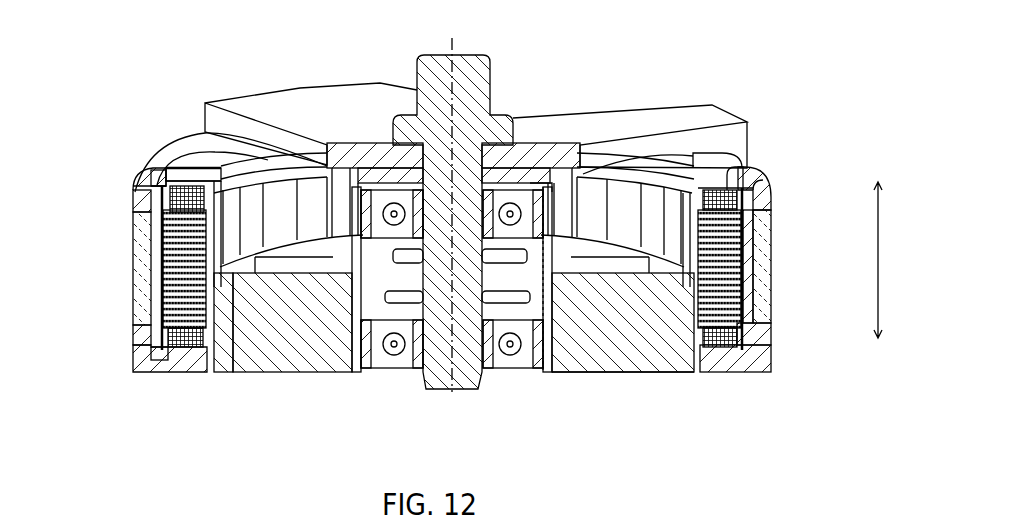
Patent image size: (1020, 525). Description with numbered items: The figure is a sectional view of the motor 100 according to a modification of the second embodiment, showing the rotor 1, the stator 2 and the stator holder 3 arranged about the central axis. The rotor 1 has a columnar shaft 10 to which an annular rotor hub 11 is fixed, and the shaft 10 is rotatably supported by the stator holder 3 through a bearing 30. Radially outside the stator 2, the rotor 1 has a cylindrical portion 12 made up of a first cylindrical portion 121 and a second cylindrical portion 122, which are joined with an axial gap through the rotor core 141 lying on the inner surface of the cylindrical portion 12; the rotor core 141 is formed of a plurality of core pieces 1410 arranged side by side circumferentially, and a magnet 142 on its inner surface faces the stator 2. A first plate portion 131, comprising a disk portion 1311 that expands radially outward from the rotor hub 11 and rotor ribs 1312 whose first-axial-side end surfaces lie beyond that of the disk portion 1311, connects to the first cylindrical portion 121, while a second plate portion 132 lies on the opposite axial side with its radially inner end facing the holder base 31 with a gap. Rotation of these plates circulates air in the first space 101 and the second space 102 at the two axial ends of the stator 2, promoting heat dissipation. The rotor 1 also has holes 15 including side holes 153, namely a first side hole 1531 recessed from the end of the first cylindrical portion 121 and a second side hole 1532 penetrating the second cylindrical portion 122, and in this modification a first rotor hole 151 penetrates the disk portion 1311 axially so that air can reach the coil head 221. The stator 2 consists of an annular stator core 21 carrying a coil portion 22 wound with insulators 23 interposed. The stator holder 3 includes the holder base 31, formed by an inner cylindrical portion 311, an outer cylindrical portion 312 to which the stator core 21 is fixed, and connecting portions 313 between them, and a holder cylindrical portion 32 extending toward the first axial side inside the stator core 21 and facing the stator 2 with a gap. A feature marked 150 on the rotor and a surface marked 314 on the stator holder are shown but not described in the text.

The motor 100 is at (83, 66).
The rotor 1 is at (218, 88).
The shaft 10 is at (417, 85).
The rotor hub 11 is at (528, 157).
The first space 101 is at (187, 178).
The second space 102 is at (187, 352).
The cylindrical portion 12 is at (52, 187).
The first cylindrical portion 121 is at (140, 208).
The second cylindrical portion 122 is at (133, 336).
The first plate portion 131 is at (738, 47).
The disk portion 1311 is at (710, 157).
The rotor rib 1312 is at (618, 117).
The second plate portion 132 is at (723, 363).
The rotor core 141 is at (767, 310).
The core piece 1410 is at (762, 295).
The magnet 142 is at (748, 277).
The holes 15 is at (165, 168).
The magnet top surface 150 is at (285, 160).
The first rotor hole 151 is at (268, 160).
The side holes 153 is at (140, 180).
The first side hole 1531 is at (158, 170).
The second side hole 1532 is at (133, 345).
The stator 2 is at (741, 192).
The stator core 21 is at (725, 253).
The coil portion 22 is at (742, 196).
The coil head 221 is at (727, 187).
The insulator 23 is at (719, 222).
The stator holder 3 is at (587, 375).
The bearing 30 is at (522, 368).
The holder base 31 is at (393, 418).
The inner cylindrical portion 311 is at (368, 365).
The outer cylindrical portion 312 is at (222, 362).
The connecting portion 313 is at (293, 363).
The base bottom surface 314 is at (625, 375).
The holder cylindrical portion 32 is at (563, 235).